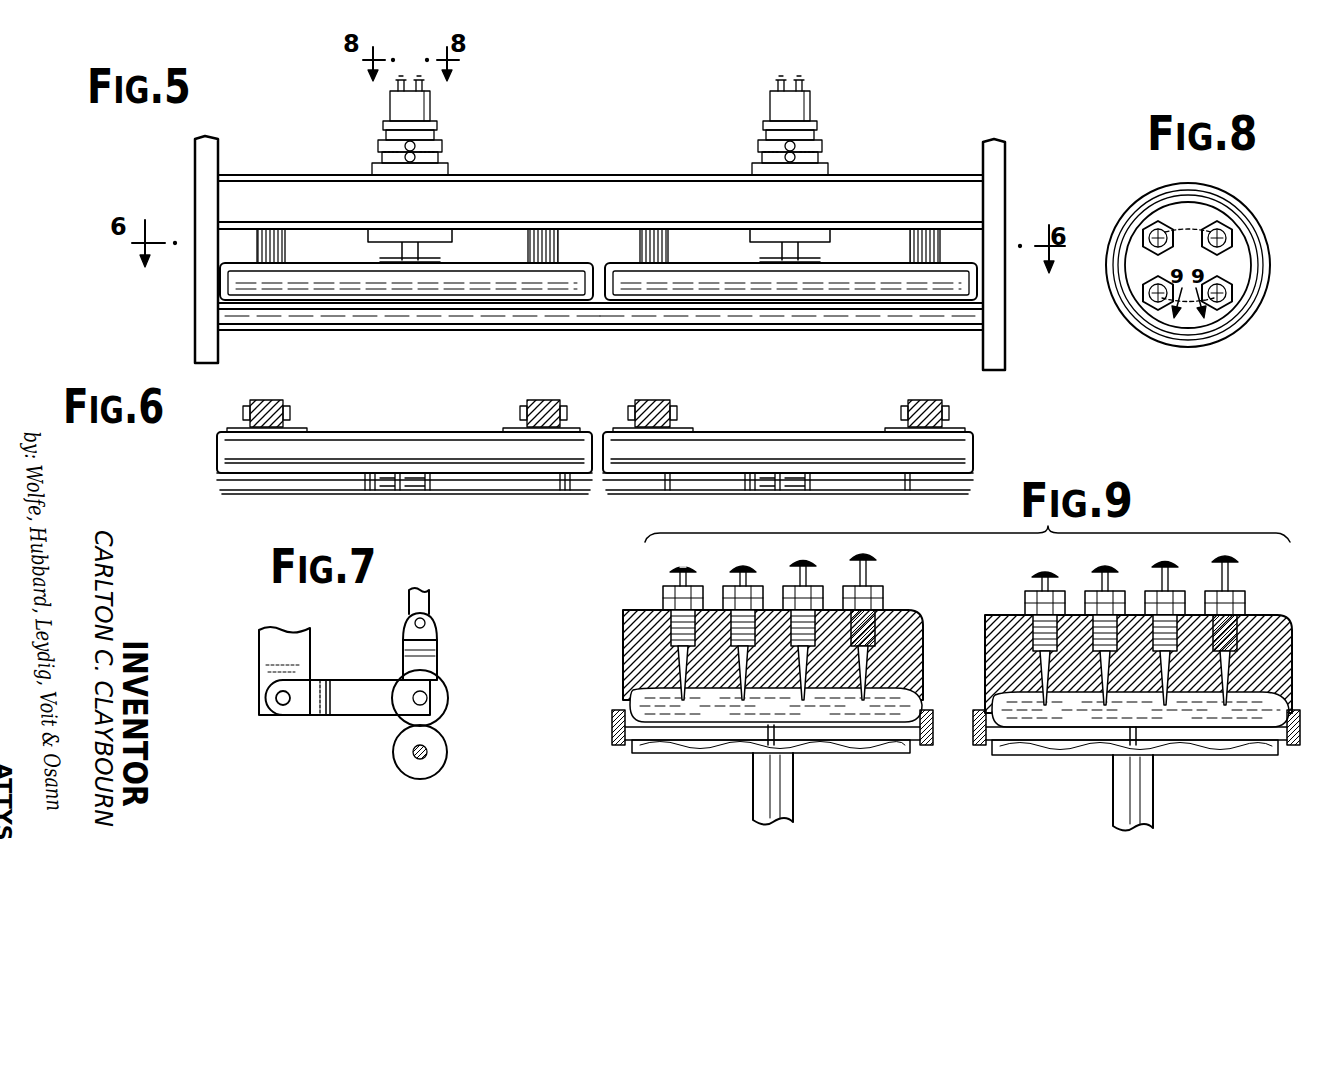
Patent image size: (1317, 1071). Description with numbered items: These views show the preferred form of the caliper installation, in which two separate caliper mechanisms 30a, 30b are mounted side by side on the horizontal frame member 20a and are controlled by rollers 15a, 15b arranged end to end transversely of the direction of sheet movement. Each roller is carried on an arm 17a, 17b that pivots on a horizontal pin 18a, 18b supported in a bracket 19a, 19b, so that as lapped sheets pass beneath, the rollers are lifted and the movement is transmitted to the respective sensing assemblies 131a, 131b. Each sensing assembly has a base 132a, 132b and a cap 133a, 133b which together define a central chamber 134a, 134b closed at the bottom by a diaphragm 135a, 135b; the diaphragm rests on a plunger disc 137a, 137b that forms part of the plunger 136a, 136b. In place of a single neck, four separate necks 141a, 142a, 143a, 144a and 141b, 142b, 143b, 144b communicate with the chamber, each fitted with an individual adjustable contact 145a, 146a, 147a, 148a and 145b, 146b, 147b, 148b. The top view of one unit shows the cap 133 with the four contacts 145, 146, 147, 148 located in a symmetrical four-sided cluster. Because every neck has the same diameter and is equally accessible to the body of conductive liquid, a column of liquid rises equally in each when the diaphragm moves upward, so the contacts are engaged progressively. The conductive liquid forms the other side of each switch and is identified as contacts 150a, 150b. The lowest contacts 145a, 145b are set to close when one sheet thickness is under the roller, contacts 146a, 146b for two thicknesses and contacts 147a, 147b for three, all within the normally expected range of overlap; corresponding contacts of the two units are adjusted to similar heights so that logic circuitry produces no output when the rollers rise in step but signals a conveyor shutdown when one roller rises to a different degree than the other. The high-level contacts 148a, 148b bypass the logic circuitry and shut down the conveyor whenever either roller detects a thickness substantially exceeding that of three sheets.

In FIG. 5, the roller 15a is at (500, 305).
In FIG. 6, the roller 15a is at (290, 494).
In FIG. 7, the roller 15a is at (446, 686).
In FIG. 5, the roller 15b is at (795, 305).
In FIG. 6, the roller 15b is at (640, 494).
In FIG. 5, the arm 17a is at (298, 265).
In FIG. 6, the arm 17a is at (222, 450).
In FIG. 7, the arm 17a is at (354, 680).
In FIG. 5, the arm 17b is at (678, 265).
In FIG. 6, the arm 17b is at (612, 455).
In FIG. 6, the horizontal pin 18a is at (292, 412).
In FIG. 7, the horizontal pin 18a is at (280, 705).
In FIG. 6, the horizontal pin 18b is at (678, 412).
In FIG. 5, the bracket 19a is at (275, 240).
In FIG. 6, the bracket 19a is at (268, 400).
In FIG. 7, the bracket 19a is at (258, 645).
In FIG. 5, the bracket 19b is at (657, 238).
In FIG. 6, the bracket 19b is at (655, 400).
In FIG. 5, the support beam 20a is at (276, 182).
In FIG. 5, the caliper mechanism 30a is at (446, 136).
In FIG. 5, the caliper mechanism 30b is at (826, 140).
In FIG. 9, the sensing assembly 131a is at (730, 690).
In FIG. 9, the sensing assembly 131b is at (1109, 683).
In FIG. 9, the base 132a is at (612, 745).
In FIG. 9, the base 132b is at (975, 745).
In FIG. 8, the cap 133 is at (1170, 345).
In FIG. 9, the cap 133a is at (622, 645).
In FIG. 9, the cap 133b is at (985, 645).
In FIG. 9, the central chamber 134a is at (805, 704).
In FIG. 9, the central chamber 134b is at (1140, 709).
In FIG. 9, the diaphragm 135a is at (850, 735).
In FIG. 9, the diaphragm 135b is at (1200, 740).
In FIG. 9, the plunger 136a is at (790, 810).
In FIG. 9, the plunger 136b is at (1155, 804).
In FIG. 9, the plunger disc 137a is at (706, 748).
In FIG. 9, the plunger disc 137b is at (1062, 750).
In FIG. 9, the neck 141a is at (700, 704).
In FIG. 9, the neck 141b is at (1030, 714).
In FIG. 9, the neck 142a is at (741, 710).
In FIG. 9, the neck 142b is at (1085, 718).
In FIG. 9, the neck 143a is at (845, 712).
In FIG. 9, the neck 143b is at (1196, 720).
In FIG. 9, the neck 144a is at (895, 704).
In FIG. 9, the neck 144b is at (1255, 714).
In FIG. 8, the adjustable contact 145 is at (1150, 300).
In FIG. 9, the adjustable contact 145a is at (678, 576).
In FIG. 9, the adjustable contact 145b is at (1038, 580).
In FIG. 8, the adjustable contact 146 is at (1150, 226).
In FIG. 9, the adjustable contact 146a is at (743, 570).
In FIG. 9, the adjustable contact 146b is at (1104, 570).
In FIG. 8, the adjustable contact 147 is at (1228, 228).
In FIG. 9, the adjustable contact 147a is at (806, 564).
In FIG. 9, the adjustable contact 147b is at (1165, 565).
In FIG. 8, the high-level contact 148 is at (1225, 305).
In FIG. 9, the high-level contact 148a is at (866, 562).
In FIG. 9, the high-level contact 148b is at (1226, 560).
In FIG. 9, the body of conductive liquid 150a is at (700, 735).
In FIG. 9, the body of conductive liquid 150b is at (1050, 740).